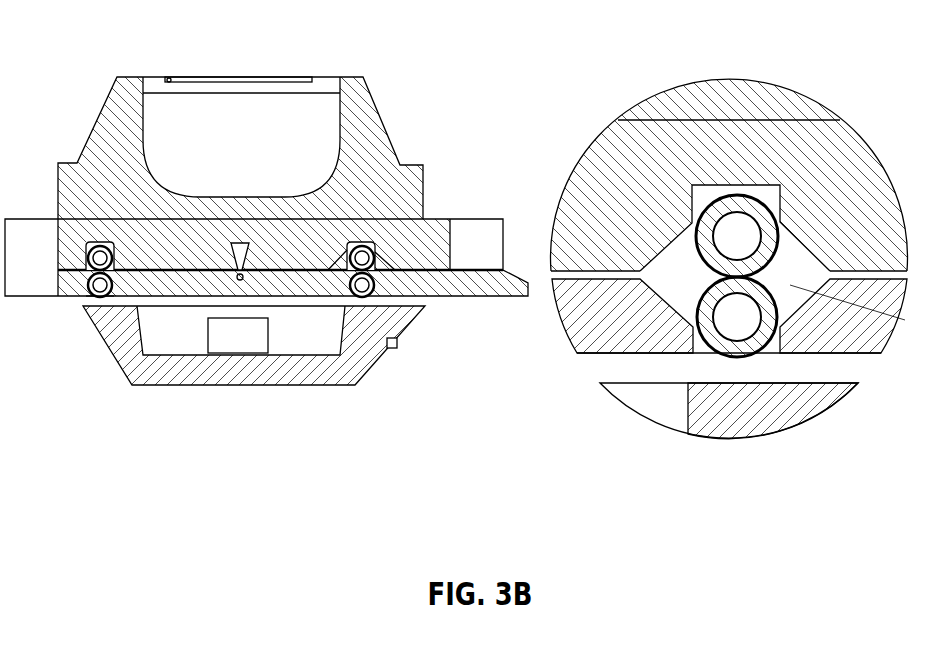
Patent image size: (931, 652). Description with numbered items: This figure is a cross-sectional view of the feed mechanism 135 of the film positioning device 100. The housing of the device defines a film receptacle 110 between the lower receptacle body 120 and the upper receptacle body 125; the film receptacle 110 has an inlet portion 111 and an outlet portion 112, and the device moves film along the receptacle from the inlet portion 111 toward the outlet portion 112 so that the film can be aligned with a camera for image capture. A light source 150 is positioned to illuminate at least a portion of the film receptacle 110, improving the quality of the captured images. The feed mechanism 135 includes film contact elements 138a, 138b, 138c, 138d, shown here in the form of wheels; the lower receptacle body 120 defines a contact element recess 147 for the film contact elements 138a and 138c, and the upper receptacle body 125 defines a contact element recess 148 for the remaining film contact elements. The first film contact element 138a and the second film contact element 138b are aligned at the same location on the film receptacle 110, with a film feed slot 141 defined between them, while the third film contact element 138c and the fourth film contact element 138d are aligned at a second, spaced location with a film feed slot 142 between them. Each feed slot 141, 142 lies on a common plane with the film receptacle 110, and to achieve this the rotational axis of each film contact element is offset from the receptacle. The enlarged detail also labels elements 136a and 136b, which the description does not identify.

The film positioning device 100 is at (351, 75).
The film receptacle 110 is at (469, 268).
The inlet portion 111 is at (453, 272).
The outlet portion 112 is at (90, 266).
The lower receptacle body 120 is at (282, 285).
The upper receptacle body 125 is at (275, 236).
The feed mechanism 135 is at (373, 270).
The lower roller 136a is at (737, 318).
The upper roller 136b is at (738, 235).
The first film contact element 138a is at (362, 299).
The second film contact element 138b is at (366, 241).
The third film contact element 138c is at (99, 299).
The fourth film contact element 138d is at (95, 240).
The film feed slot 141 is at (857, 309).
The film feed slot 142 is at (93, 274).
The contact element recess 147 is at (666, 308).
The contact element recess 148 is at (687, 212).
The light source 150 is at (232, 356).